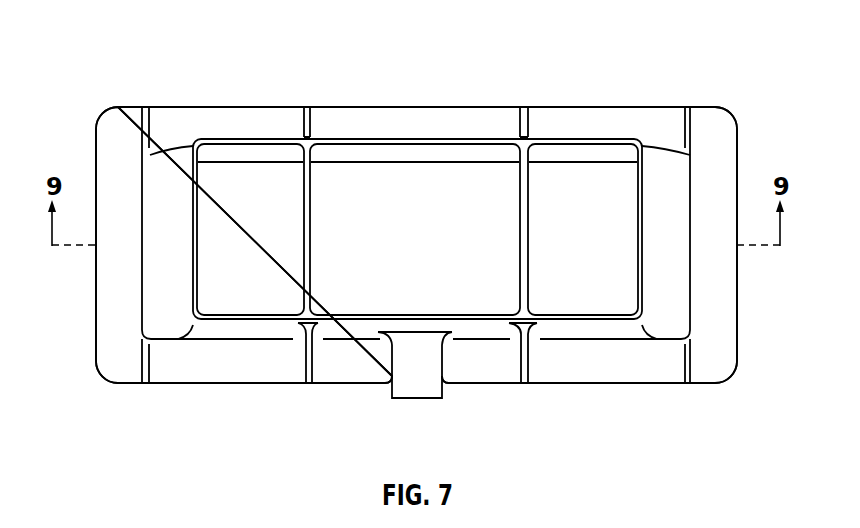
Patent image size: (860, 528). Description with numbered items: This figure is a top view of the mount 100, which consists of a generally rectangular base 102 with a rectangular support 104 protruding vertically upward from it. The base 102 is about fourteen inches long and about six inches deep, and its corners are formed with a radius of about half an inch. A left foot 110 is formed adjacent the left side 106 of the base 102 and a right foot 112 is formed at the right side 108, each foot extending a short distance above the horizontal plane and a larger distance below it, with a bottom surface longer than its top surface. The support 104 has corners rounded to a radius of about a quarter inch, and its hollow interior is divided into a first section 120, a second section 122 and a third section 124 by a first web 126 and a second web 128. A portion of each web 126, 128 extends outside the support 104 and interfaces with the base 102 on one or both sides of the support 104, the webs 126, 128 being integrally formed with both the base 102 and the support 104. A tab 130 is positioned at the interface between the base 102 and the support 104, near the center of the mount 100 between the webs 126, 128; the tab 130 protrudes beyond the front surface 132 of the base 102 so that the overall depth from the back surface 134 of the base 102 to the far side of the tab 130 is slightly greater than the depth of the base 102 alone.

The mount 100 is at (742, 40).
The rectangular base 102 is at (758, 141).
The rectangular support 104 is at (455, 122).
The left side 106 is at (97, 343).
The right side 108 is at (737, 300).
The left foot 110 is at (122, 322).
The right foot 112 is at (710, 323).
The first section 120 is at (255, 193).
The second section 122 is at (396, 193).
The third section 124 is at (555, 193).
The first web 126 is at (315, 358).
The second web 128 is at (528, 357).
The tab 130 is at (420, 387).
The front surface 132 is at (227, 383).
The back surface 134 is at (228, 107).